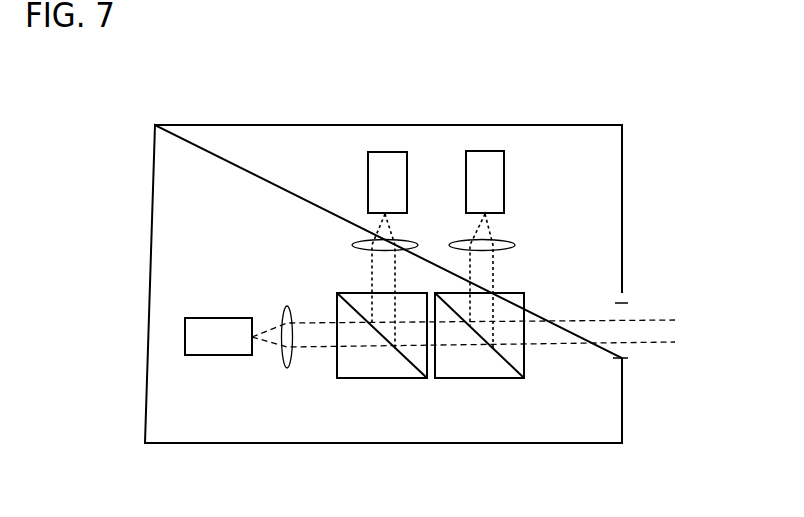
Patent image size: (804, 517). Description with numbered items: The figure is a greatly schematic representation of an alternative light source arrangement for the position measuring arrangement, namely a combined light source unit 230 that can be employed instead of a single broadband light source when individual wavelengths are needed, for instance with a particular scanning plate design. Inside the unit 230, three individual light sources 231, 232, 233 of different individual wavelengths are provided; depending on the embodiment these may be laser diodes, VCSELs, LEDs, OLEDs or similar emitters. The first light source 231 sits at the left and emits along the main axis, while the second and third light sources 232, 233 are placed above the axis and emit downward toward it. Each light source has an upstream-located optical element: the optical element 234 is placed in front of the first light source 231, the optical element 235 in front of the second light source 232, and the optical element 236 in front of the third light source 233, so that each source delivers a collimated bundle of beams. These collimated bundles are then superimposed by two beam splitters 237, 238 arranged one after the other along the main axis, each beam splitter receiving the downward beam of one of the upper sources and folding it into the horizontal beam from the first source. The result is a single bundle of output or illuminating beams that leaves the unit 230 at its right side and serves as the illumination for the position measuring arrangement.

The housing 230 is at (227, 443).
The individual light source 231 is at (193, 330).
The individual light source 232 is at (368, 158).
The individual light source 233 is at (500, 163).
The optical element 234 is at (290, 365).
The optical element 235 is at (353, 246).
The optical element 236 is at (512, 243).
The beam splitter 237 is at (391, 362).
The beam splitter 238 is at (494, 362).